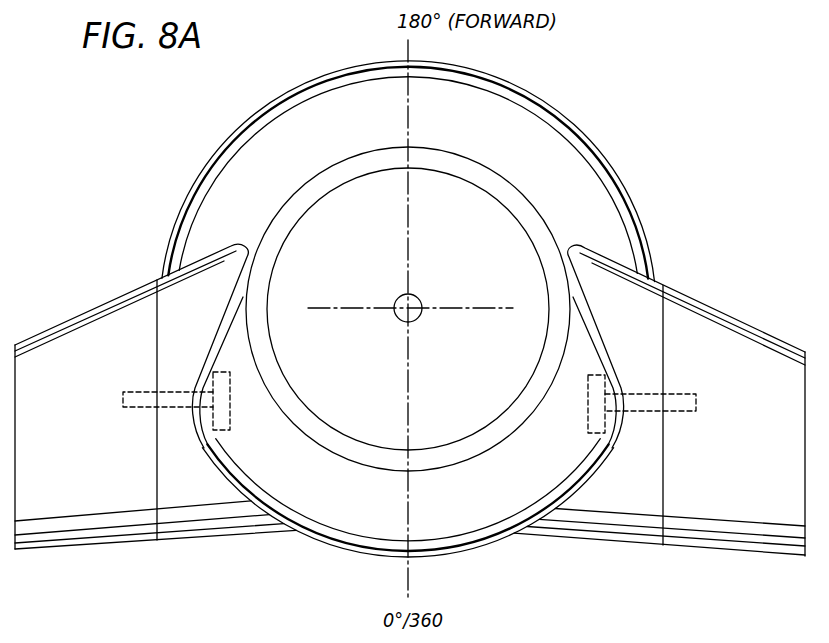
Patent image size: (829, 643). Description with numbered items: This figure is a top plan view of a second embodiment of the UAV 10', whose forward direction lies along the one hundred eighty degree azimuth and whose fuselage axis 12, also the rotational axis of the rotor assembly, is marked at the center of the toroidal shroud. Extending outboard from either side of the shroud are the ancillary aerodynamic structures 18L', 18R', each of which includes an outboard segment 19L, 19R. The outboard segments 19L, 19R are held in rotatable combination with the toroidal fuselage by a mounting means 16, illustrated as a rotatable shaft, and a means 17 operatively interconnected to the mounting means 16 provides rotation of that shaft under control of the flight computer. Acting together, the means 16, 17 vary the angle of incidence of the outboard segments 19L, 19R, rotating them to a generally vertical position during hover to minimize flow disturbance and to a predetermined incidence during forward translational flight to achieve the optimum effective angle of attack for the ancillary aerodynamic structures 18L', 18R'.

The UAV 10' is at (408, 309).
The fuselage axis 12 is at (418, 297).
The left ancillary aerodynamic structure 18L' is at (131, 396).
The right ancillary aerodynamic structure 18R' is at (686, 438).
The left outboard segment 19L is at (78, 494).
The right outboard segment 19R is at (776, 500).
The mounting means 16 is at (173, 409).
The rotation means 17 is at (223, 432).